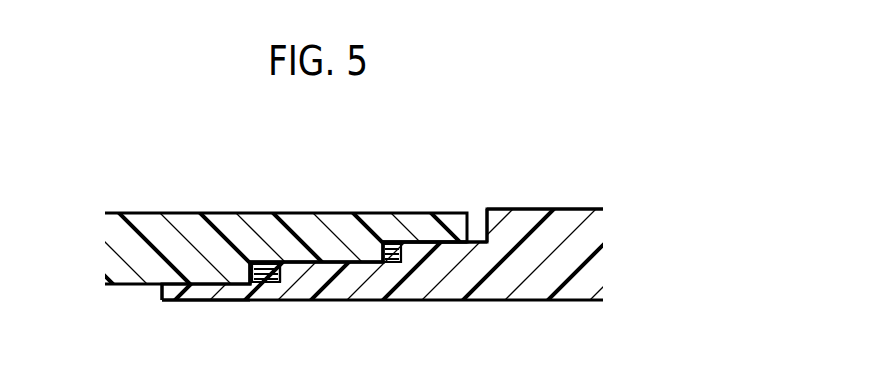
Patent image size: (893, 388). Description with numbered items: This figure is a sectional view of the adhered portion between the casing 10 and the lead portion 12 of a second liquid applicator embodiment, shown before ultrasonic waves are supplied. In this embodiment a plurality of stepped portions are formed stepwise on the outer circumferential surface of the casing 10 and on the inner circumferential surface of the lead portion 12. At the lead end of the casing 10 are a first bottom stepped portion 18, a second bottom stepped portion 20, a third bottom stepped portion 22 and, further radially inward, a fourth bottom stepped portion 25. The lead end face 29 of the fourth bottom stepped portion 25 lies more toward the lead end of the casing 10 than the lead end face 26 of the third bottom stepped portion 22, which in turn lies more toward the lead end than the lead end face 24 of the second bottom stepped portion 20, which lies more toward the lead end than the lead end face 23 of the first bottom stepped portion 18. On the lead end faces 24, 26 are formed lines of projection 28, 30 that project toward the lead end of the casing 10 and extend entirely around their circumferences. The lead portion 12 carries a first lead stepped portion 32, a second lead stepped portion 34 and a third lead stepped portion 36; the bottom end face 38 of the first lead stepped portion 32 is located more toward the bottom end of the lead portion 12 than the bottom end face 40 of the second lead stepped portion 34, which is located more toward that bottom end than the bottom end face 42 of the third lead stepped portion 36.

The casing 10 is at (576, 312).
The lead portion 12 is at (125, 209).
The first bottom stepped portion 18 is at (497, 213).
The second bottom stepped portion 20 is at (412, 244).
The third bottom stepped portion 22 is at (280, 270).
The lead end face 23 is at (483, 245).
The lead end face 24 is at (390, 244).
The fourth bottom stepped portion 25 is at (185, 292).
The lead end face 26 is at (266, 264).
The line of projection 28 is at (255, 263).
The lead end face 29 is at (162, 290).
The line of projection 30 is at (406, 263).
The first lead stepped portion 32 is at (453, 236).
The second lead stepped portion 34 is at (345, 266).
The third lead stepped portion 36 is at (213, 288).
The bottom end face 38 is at (483, 240).
The bottom end face 40 is at (397, 268).
The bottom end face 42 is at (268, 283).